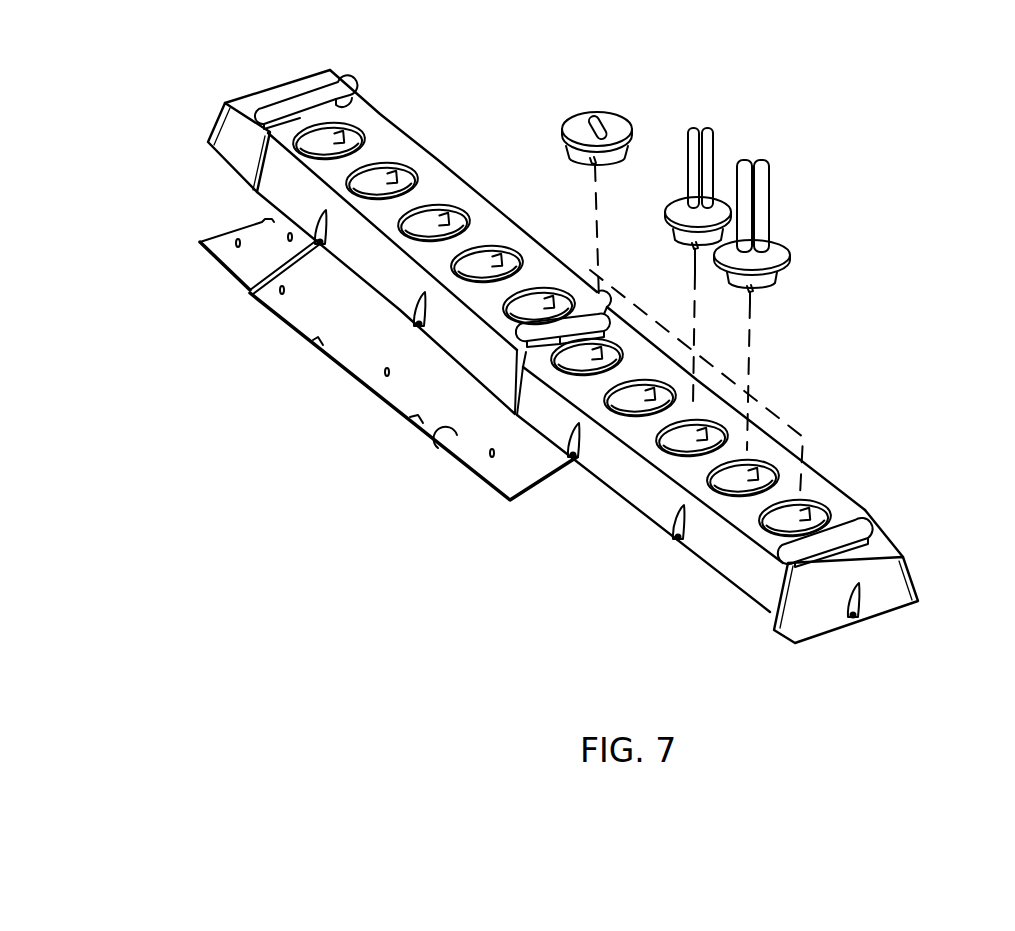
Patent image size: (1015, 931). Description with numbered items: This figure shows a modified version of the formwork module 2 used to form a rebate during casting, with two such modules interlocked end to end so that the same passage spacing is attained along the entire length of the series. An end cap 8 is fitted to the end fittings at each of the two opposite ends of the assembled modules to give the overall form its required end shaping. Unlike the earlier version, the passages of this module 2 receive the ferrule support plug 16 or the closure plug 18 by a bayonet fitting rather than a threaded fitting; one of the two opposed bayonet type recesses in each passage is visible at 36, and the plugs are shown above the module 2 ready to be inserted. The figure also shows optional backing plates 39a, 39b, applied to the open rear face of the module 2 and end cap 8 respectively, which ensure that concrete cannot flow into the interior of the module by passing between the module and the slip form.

The formwork module 2 is at (407, 110).
The end cap 8 is at (217, 132).
The ferrule support plug 16 is at (800, 252).
The closure plug 18 is at (588, 97).
The bayonet type recess 36 is at (463, 213).
The backing plate 39a is at (452, 457).
The backing plate 39b is at (210, 254).